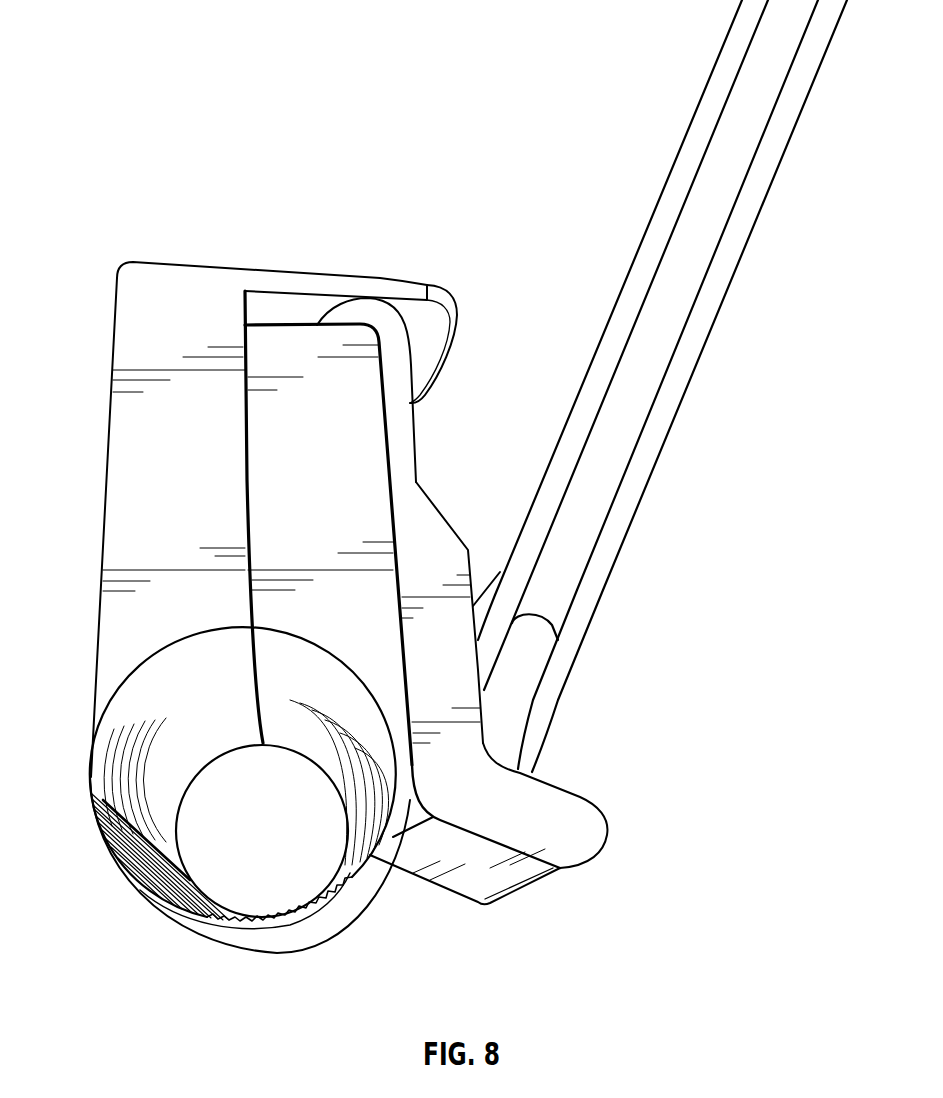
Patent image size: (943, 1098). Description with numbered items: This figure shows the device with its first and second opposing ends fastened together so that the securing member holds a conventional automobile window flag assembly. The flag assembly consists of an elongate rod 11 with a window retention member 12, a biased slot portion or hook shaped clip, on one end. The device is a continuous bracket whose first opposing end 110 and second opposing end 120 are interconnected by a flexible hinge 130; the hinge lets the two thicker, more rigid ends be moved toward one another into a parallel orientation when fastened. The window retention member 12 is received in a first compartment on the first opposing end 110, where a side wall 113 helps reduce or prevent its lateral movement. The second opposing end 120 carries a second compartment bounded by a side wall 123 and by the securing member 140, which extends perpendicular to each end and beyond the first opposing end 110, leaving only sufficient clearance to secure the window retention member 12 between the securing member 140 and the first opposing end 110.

The elongate rod 11 is at (660, 307).
The window retention member 12 is at (367, 315).
The first opposing end 110 is at (323, 548).
The side wall 113 is at (357, 614).
The second opposing end 120 is at (110, 410).
The side wall 123 is at (130, 487).
The flexible hinge 130 is at (157, 893).
The securing member 140 is at (332, 284).